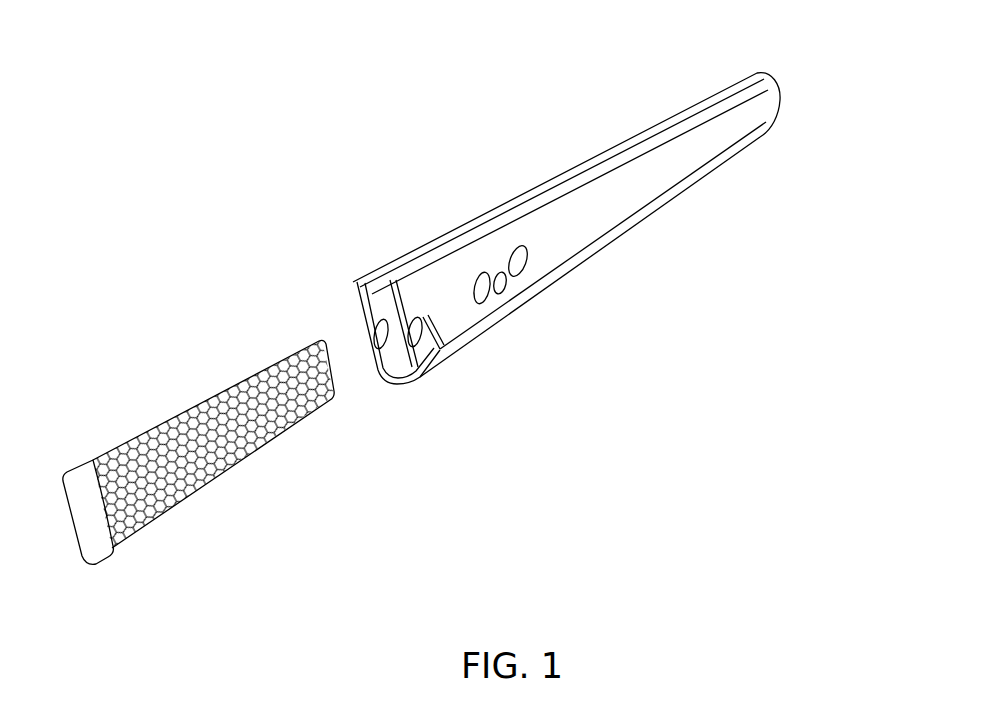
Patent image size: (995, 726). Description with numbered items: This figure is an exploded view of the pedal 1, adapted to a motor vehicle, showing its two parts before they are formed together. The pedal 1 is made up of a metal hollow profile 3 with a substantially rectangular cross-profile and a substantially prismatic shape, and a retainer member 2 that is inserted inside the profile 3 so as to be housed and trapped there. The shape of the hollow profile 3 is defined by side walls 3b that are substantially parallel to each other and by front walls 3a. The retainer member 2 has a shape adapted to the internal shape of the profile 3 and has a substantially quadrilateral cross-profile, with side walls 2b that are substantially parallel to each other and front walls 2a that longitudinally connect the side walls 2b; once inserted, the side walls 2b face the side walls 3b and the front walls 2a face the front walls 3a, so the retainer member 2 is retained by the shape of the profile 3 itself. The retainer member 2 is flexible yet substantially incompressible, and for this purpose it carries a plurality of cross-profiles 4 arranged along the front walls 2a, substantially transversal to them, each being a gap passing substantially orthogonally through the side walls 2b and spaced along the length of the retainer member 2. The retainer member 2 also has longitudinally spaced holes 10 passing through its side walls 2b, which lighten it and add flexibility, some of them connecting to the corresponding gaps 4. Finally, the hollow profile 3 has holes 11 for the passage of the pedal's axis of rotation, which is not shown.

The pedal 1 is at (367, 439).
The retainer member 2 is at (212, 514).
The front walls 2a is at (247, 373).
The side walls 2b is at (143, 480).
The hollow profile 3 is at (555, 310).
The front walls 3a is at (633, 137).
The side walls 3b is at (382, 312).
The cross-profiles 4 is at (310, 352).
The holes 10 is at (165, 478).
The holes 11 is at (413, 330).